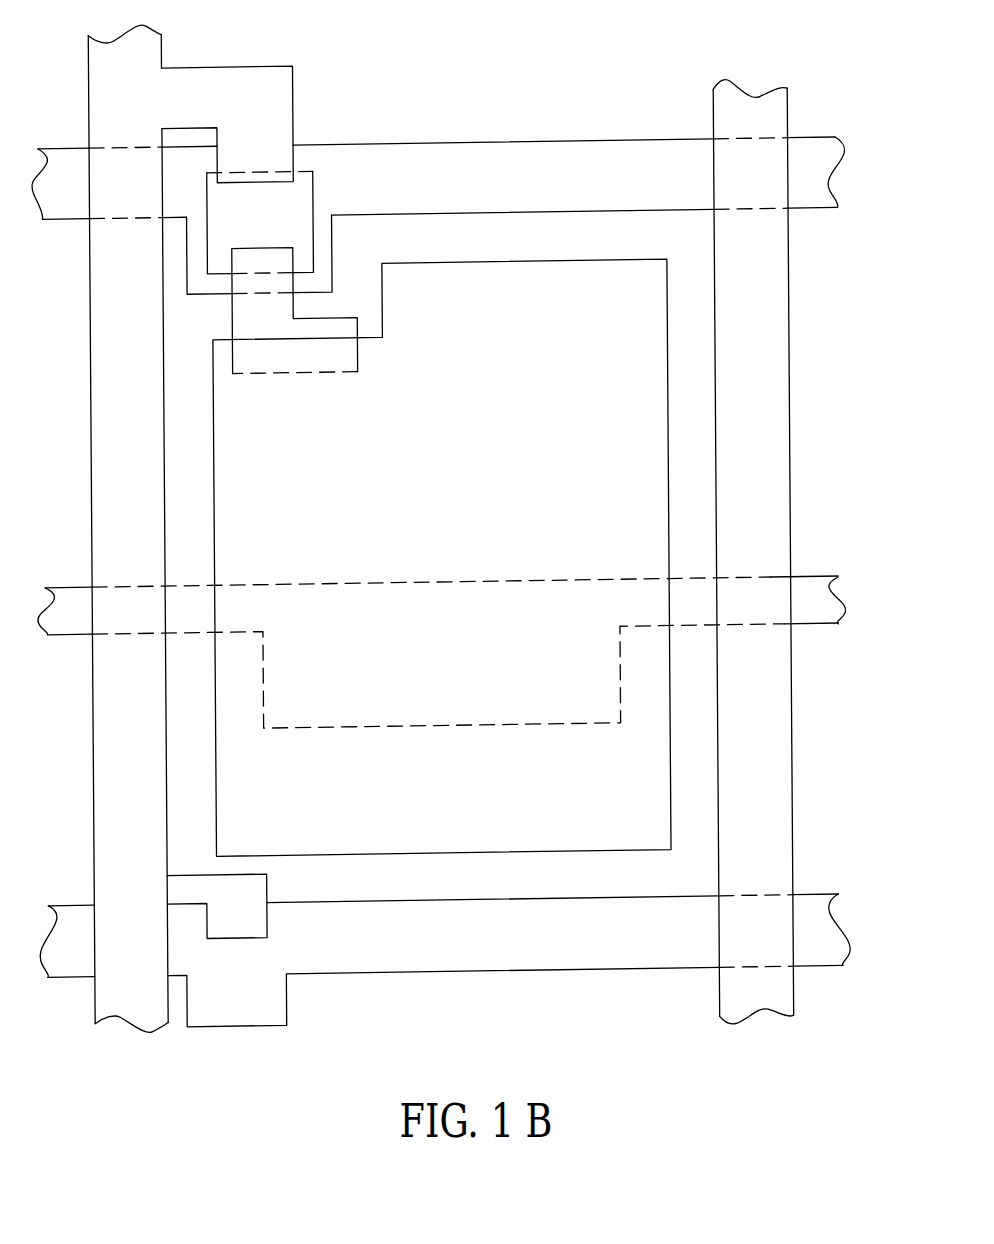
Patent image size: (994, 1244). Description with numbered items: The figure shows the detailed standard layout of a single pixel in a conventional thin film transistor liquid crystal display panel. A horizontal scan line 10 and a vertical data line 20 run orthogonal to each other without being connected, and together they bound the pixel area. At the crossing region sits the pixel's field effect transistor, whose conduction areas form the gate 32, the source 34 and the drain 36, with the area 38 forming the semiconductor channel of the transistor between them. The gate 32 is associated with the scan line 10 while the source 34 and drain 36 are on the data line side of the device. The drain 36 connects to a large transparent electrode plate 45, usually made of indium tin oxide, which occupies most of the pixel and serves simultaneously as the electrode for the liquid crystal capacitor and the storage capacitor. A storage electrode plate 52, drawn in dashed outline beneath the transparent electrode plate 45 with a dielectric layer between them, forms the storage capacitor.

The scan line 10 is at (612, 153).
The data line 20 is at (97, 320).
The gate 32 is at (320, 230).
The source 34 is at (268, 72).
The drain 36 is at (240, 313).
The semiconductor channel 38 is at (305, 180).
The transparent electrode plate 45 is at (668, 471).
The storage electrode plate 52 is at (822, 625).